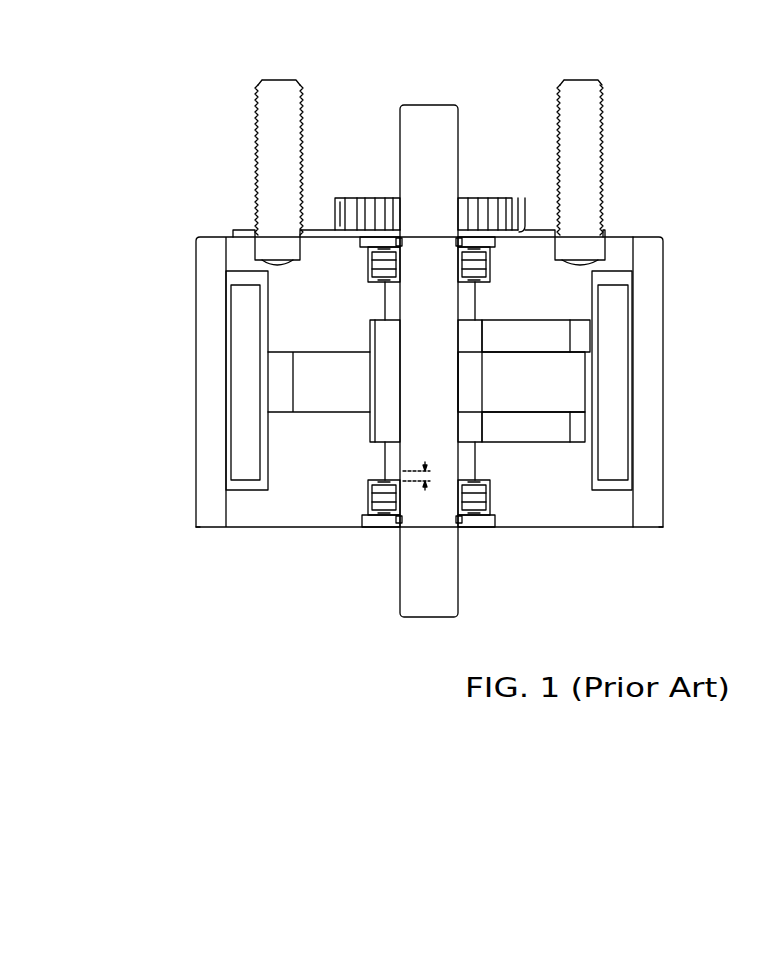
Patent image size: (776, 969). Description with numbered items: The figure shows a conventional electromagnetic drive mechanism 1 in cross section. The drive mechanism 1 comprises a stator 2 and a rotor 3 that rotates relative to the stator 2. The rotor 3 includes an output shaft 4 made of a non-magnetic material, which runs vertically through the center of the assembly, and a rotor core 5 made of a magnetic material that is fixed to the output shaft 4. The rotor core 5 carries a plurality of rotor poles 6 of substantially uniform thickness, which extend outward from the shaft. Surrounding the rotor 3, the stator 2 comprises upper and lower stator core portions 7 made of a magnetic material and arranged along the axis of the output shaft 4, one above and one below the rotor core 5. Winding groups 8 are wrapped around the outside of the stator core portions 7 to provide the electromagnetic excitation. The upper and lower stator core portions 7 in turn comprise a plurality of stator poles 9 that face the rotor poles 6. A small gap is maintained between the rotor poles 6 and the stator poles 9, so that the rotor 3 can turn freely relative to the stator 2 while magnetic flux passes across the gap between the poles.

The electromagnetic drive mechanism 1 is at (423, 50).
The stator 2 is at (334, 292).
The rotor 3 is at (334, 364).
The output shaft 4 is at (422, 470).
The rotor core 5 is at (390, 382).
The rotor poles 6 is at (548, 363).
The stator core portions 7 is at (530, 280).
The winding groups 8 is at (608, 338).
The stator poles 9 is at (553, 330).